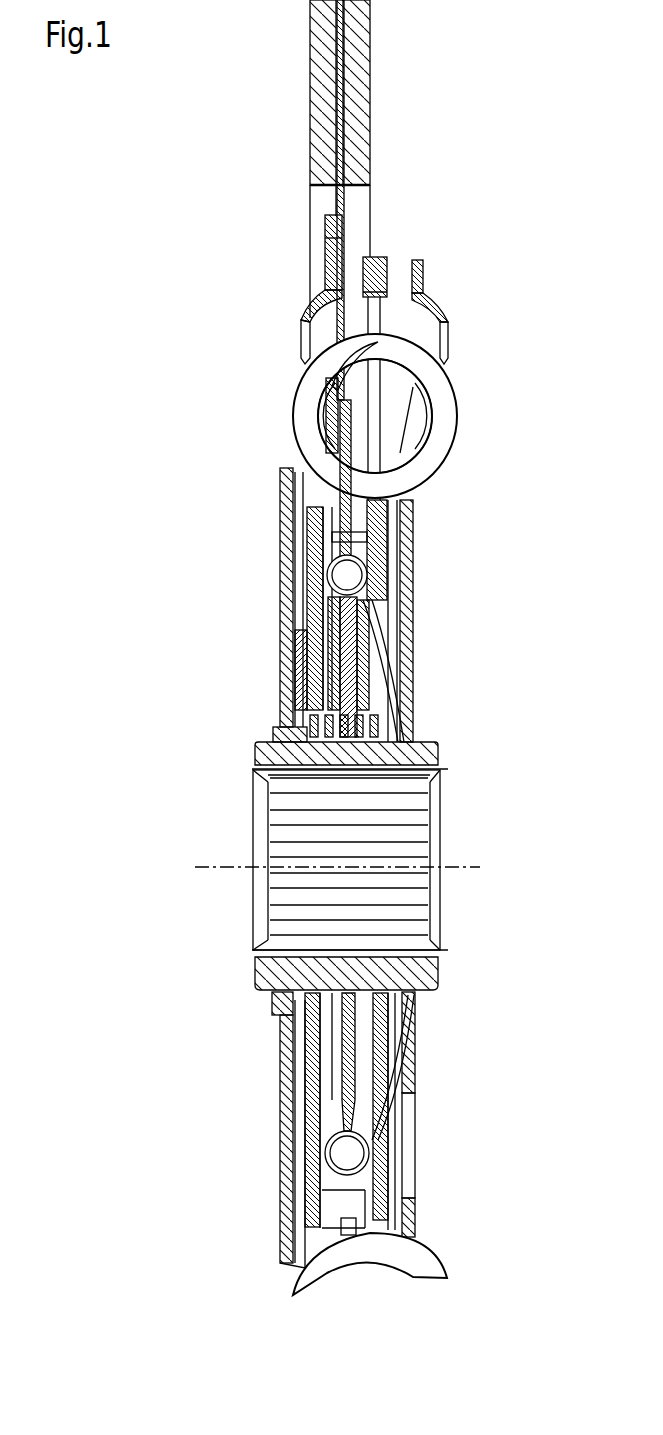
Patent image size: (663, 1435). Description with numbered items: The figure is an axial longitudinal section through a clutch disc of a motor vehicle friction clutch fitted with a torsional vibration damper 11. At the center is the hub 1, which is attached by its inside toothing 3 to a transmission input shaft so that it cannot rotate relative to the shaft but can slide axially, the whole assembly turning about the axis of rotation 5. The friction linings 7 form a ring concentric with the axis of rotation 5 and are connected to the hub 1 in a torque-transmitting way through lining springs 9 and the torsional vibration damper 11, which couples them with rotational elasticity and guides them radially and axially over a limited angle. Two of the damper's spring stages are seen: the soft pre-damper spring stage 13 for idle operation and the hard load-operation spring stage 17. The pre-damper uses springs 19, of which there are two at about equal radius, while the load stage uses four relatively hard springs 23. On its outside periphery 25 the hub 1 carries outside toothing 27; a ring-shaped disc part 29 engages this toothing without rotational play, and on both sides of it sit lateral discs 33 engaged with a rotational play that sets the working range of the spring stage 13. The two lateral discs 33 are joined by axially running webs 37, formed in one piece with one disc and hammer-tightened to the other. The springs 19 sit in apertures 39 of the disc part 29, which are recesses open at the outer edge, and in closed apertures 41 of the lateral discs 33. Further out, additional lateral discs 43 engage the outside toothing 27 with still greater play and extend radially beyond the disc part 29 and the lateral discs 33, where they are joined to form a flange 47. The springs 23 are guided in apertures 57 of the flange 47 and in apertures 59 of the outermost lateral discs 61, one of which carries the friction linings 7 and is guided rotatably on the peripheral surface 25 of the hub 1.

The hub 1 is at (258, 750).
The inside toothing 3 is at (265, 780).
The axis of rotation 5 is at (223, 867).
The friction linings 7 is at (320, 85).
The lining springs 9 is at (340, 210).
The torsional vibration damper 11 is at (455, 270).
The spring stage 13 is at (404, 565).
The spring stage 17 is at (462, 380).
The springs 19 is at (305, 552).
The springs 23 is at (442, 440).
The outside periphery 25 is at (428, 742).
The outside toothing 27 is at (420, 783).
The disc part 29 is at (305, 636).
The lateral discs 33 is at (303, 655).
The webs 37 is at (312, 512).
The apertures 39 is at (340, 582).
The apertures 41 is at (325, 568).
The lateral discs 43 is at (320, 530).
The flange 47 is at (387, 257).
The apertures 57 is at (355, 392).
The apertures 59 is at (330, 421).
The lateral discs 61 is at (282, 466).